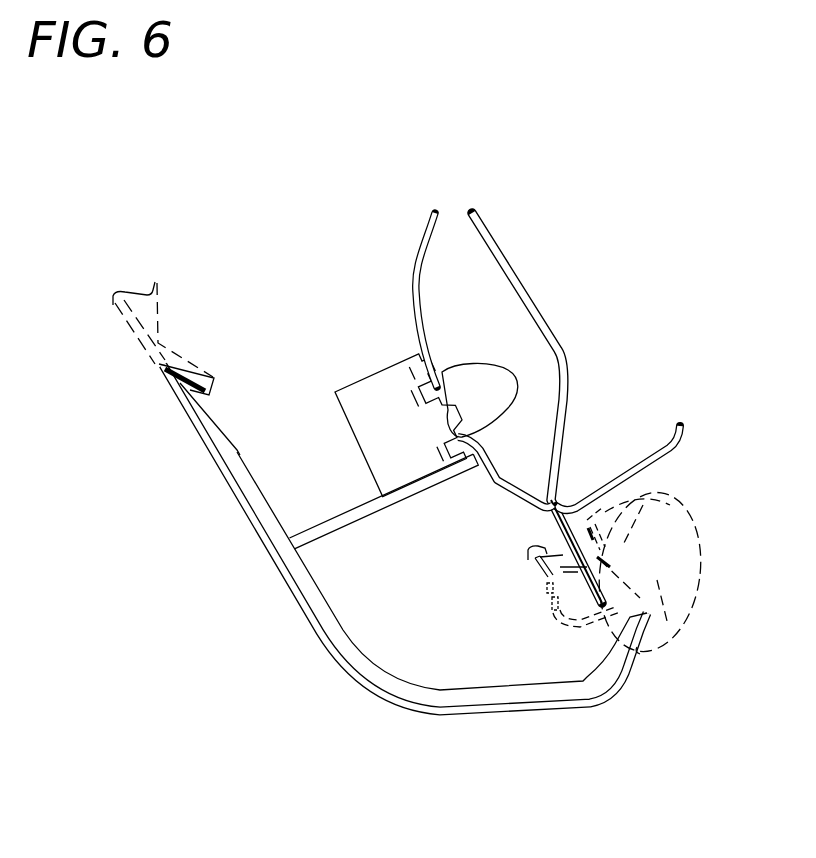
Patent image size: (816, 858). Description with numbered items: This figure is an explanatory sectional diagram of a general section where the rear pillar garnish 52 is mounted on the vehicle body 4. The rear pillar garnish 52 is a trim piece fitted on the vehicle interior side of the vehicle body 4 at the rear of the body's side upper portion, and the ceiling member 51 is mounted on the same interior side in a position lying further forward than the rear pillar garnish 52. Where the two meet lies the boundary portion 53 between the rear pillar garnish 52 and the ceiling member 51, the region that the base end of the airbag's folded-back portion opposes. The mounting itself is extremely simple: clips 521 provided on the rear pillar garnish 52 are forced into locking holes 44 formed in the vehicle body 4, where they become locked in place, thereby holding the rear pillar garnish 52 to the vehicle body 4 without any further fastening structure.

The vehicle body 4 is at (555, 341).
The locking hole 44 is at (485, 408).
The ceiling member 51 is at (133, 325).
The rear pillar garnish 52 is at (325, 614).
The boundary portion 53 is at (175, 395).
The clip 521 is at (473, 388).